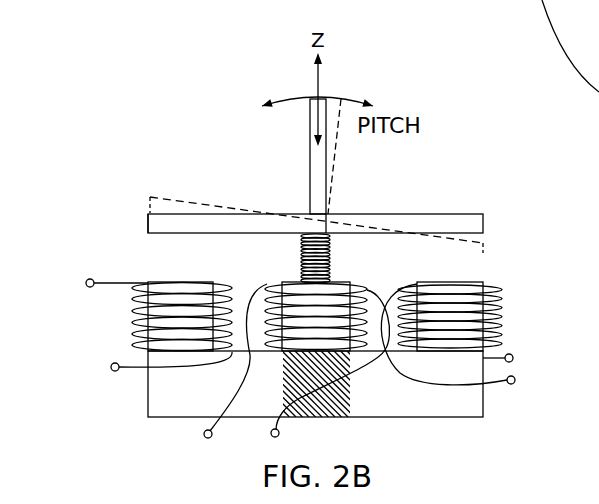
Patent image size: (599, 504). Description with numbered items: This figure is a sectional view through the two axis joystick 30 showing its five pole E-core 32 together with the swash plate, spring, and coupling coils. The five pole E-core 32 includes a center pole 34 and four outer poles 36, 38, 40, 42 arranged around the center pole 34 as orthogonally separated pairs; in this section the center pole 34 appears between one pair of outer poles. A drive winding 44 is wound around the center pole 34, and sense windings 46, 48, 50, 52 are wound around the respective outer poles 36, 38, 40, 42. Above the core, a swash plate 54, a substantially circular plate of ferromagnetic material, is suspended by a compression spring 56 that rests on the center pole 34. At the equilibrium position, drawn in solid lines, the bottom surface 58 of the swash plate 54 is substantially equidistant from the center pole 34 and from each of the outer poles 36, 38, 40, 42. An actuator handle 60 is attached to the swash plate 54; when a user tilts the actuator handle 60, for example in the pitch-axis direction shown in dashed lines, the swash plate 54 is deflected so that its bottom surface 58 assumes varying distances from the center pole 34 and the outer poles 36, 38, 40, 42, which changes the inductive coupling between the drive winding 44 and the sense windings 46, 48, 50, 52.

The two axis joystick 30 is at (240, 173).
The five pole E-core 32 is at (406, 411).
The center pole 34 is at (340, 283).
The outer pole 36 is at (457, 302).
The outer pole 38 is at (451, 283).
The outer pole 40 is at (182, 299).
The outer pole 42 is at (198, 283).
The drive winding 44 is at (279, 258).
The sense winding 46 is at (478, 334).
The sense winding 48 is at (502, 323).
The sense winding 50 is at (141, 325).
The sense winding 52 is at (132, 311).
The swash plate 54 is at (447, 222).
The compression spring 56 is at (328, 244).
The bottom surface 58 is at (152, 222).
The actuator handle 60 is at (309, 174).